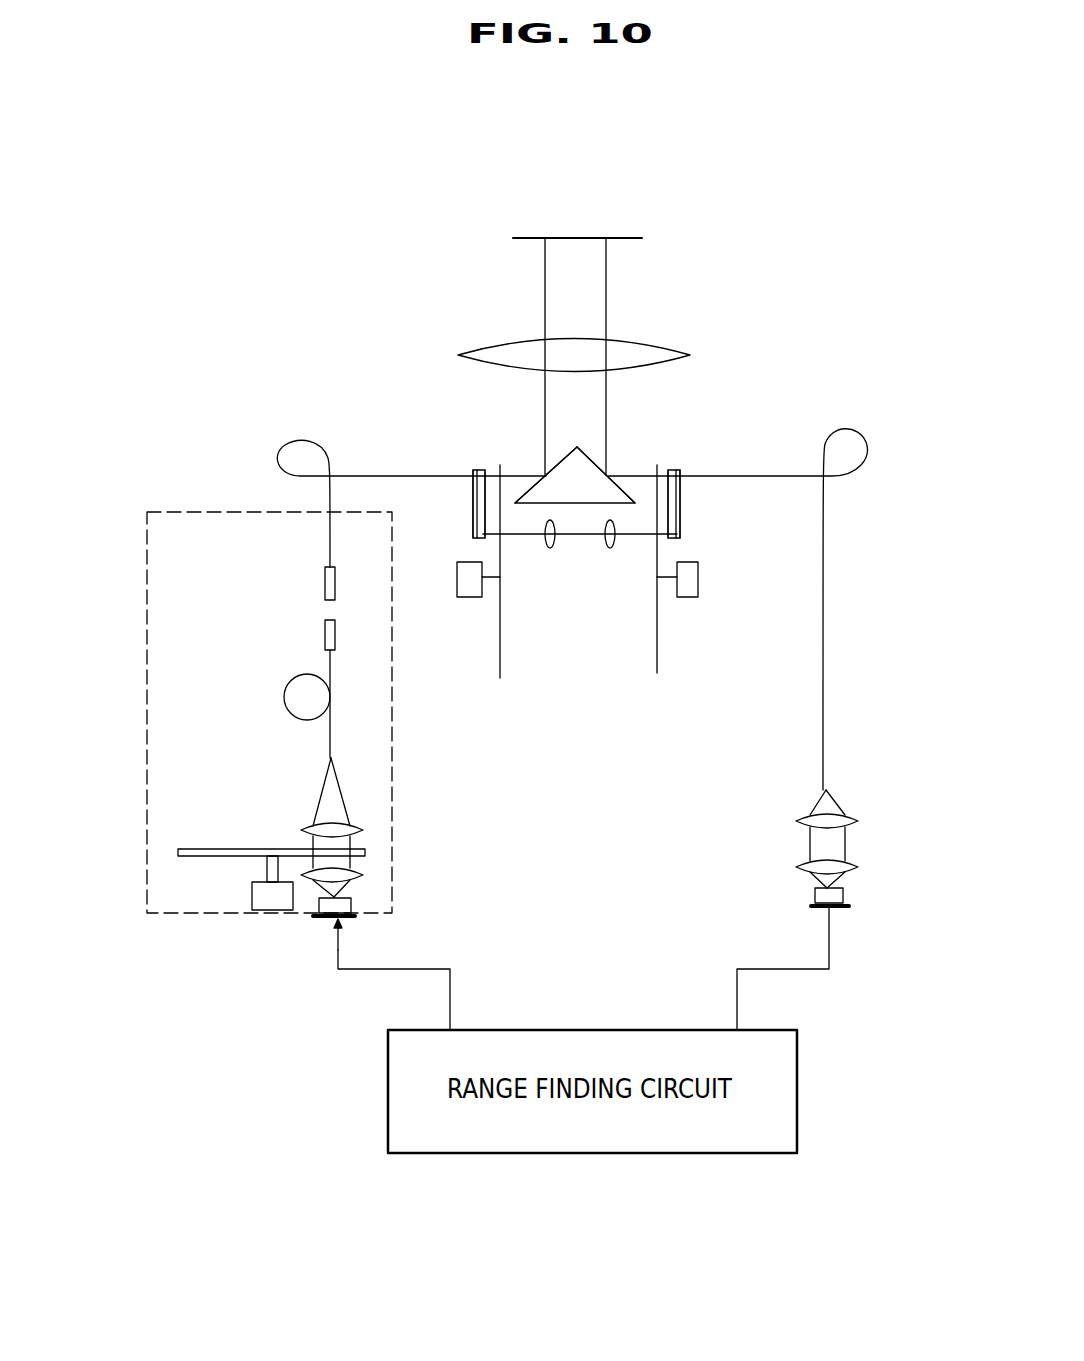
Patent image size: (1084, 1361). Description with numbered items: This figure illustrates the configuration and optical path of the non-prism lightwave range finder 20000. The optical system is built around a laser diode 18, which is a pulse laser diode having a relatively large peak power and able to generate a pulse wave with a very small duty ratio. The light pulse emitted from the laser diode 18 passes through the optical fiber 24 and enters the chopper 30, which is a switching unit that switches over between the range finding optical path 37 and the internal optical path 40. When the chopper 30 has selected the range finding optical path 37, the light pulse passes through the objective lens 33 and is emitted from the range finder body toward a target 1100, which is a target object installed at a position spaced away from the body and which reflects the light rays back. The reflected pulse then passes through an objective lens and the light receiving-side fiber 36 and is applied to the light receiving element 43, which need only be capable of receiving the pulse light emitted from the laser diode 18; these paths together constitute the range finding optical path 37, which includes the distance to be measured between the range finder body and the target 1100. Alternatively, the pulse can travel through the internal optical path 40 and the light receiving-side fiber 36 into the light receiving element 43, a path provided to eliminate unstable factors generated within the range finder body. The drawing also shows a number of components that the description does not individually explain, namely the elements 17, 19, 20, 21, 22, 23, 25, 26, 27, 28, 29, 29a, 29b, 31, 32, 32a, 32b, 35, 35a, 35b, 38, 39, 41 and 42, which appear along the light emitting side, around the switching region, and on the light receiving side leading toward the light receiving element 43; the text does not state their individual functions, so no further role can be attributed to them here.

The light projecting unit 17 is at (147, 856).
The laser diode 18 is at (356, 917).
The condenser lens 19 is at (365, 875).
The collimator lens 20 is at (365, 830).
The pattern plate 21 is at (378, 853).
The drive shaft 22 is at (203, 849).
The motor 23 is at (252, 897).
The optical fiber 24 is at (330, 740).
The optical filter 25 is at (325, 632).
The shutter 26 is at (325, 584).
The optical fiber 27 is at (272, 608).
The projecting optical fiber 28 is at (378, 476).
The fiber holder 29 is at (478, 468).
The holder member 29a is at (470, 486).
The holder member 29b is at (473, 540).
The chopper 30 is at (500, 678).
The support column 31 is at (657, 673).
The prism 32 is at (572, 473).
The prism reflecting surface 32a is at (560, 463).
The prism reflecting surface 32b is at (595, 464).
The objective lens 33 is at (482, 348).
The fiber holder 35 is at (673, 468).
The holder member 35a is at (681, 482).
The holder member 35b is at (682, 537).
The light receiving-side fiber 36 is at (766, 472).
The range finding optical path 37 is at (606, 280).
The lens 38 is at (550, 548).
The lens 39 is at (610, 548).
The internal optical path 40 is at (585, 580).
The collimator lens 41 is at (860, 818).
The condenser lens 42 is at (860, 860).
The light receiving element 43 is at (854, 905).
The object 1100 is at (581, 233).
The non-prism lightwave range finder 20000 is at (267, 1220).